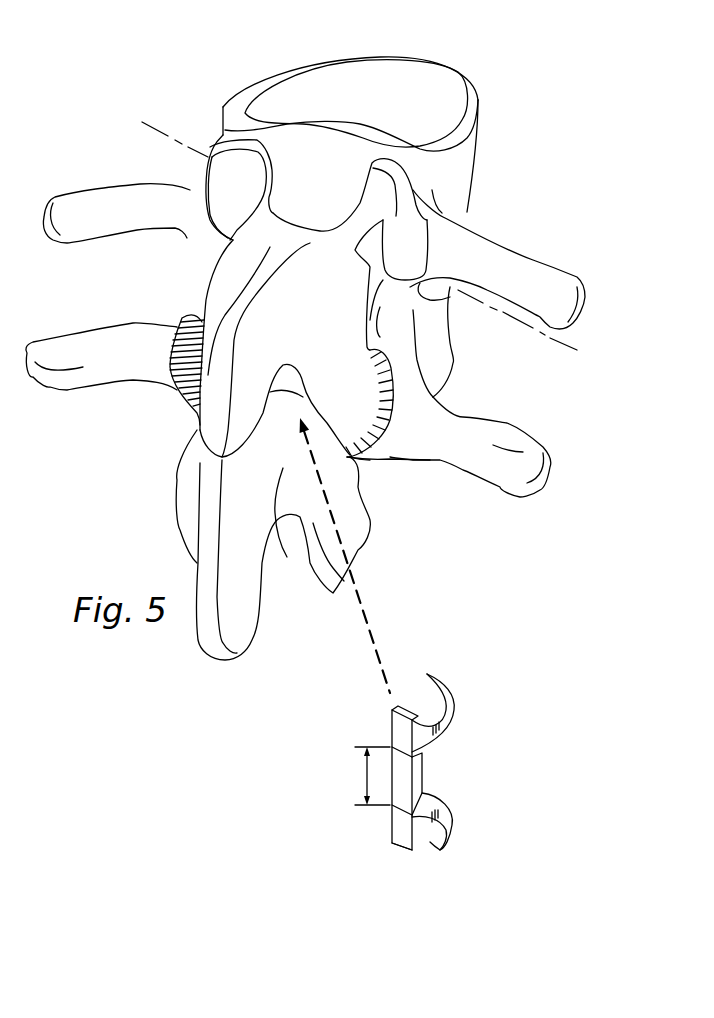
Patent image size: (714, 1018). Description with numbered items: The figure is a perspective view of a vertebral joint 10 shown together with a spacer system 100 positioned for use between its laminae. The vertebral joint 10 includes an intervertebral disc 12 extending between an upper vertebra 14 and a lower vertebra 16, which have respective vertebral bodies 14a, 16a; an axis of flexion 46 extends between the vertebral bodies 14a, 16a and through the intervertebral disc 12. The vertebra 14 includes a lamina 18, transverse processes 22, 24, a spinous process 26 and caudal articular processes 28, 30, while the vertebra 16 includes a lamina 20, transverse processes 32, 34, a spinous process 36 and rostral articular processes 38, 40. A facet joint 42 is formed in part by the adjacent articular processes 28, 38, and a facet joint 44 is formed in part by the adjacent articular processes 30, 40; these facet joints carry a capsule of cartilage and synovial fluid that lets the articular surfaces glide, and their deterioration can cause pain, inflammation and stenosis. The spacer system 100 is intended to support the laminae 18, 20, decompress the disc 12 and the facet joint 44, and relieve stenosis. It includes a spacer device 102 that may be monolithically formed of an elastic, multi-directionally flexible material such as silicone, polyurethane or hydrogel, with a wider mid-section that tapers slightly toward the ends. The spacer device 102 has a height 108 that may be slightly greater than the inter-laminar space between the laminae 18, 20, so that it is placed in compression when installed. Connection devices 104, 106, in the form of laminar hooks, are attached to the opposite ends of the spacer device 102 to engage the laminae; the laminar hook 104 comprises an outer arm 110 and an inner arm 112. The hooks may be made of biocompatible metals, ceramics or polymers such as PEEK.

The vertebral joint 10 is at (172, 73).
The intervertebral disc 12 is at (517, 320).
The vertebra 14 is at (293, 60).
The vertebral body 14a is at (480, 108).
The vertebra 16 is at (372, 553).
The vertebral body 16a is at (453, 363).
The lamina 18 is at (440, 213).
The lamina 20 is at (307, 527).
The transverse process 22 is at (72, 190).
The transverse process 24 is at (537, 260).
The spinous process 26 is at (207, 300).
The caudal articular process 28 is at (202, 322).
The caudal articular process 30 is at (353, 393).
The transverse process 32 is at (53, 395).
The transverse process 34 is at (517, 500).
The spinous process 36 is at (255, 630).
The rostral articular process 38 is at (182, 407).
The rostral articular process 40 is at (383, 461).
The facet joint 42 is at (170, 348).
The facet joint 44 is at (390, 403).
The axis of flexion 46 is at (152, 128).
The spacer system 100 is at (536, 746).
The spacer device 102 is at (423, 777).
The connection device 104 is at (458, 842).
The connection device 106 is at (460, 697).
The height 108 is at (363, 776).
The outer arm 110 is at (400, 842).
The inner arm 112 is at (455, 817).